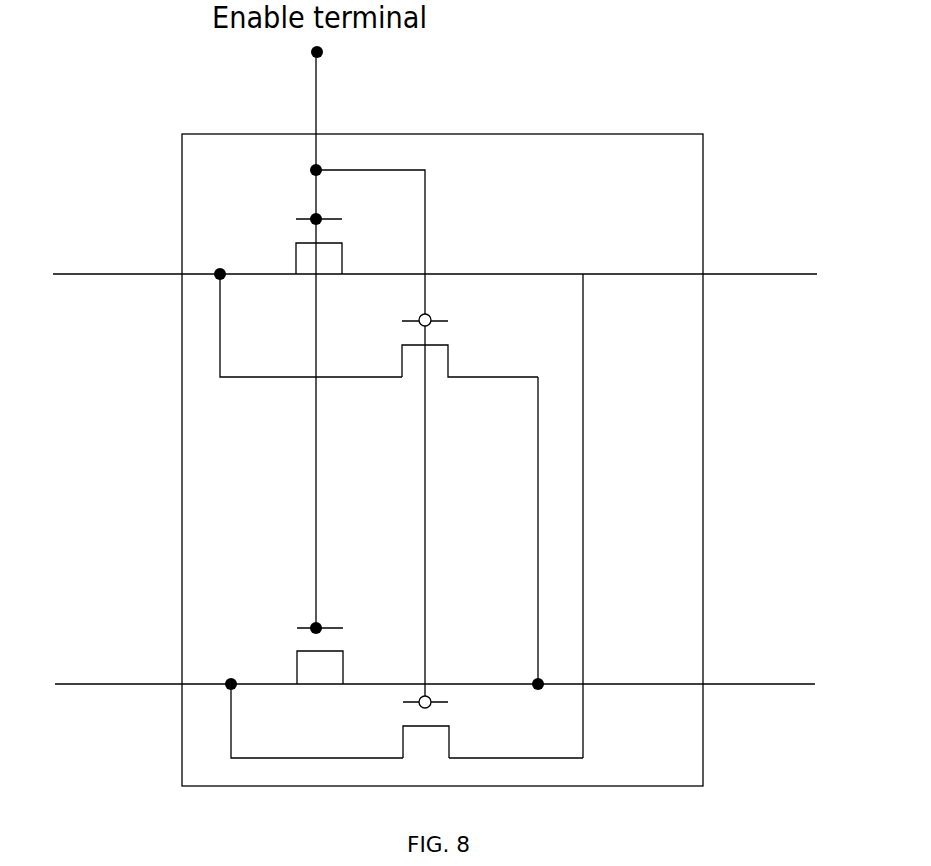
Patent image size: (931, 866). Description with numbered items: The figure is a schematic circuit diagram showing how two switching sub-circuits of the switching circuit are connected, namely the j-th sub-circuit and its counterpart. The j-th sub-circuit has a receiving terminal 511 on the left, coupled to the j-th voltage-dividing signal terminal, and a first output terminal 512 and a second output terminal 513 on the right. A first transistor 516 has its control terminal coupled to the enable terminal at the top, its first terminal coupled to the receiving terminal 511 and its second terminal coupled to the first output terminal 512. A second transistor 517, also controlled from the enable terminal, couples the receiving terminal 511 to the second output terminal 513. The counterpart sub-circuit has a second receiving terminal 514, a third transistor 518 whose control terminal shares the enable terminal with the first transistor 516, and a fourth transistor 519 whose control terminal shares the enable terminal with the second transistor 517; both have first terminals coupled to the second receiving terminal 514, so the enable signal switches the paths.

The receiving terminal 511 is at (266, 254).
The first output terminal 512 is at (648, 254).
The second output terminal 513 is at (647, 660).
The second receiving terminal 514 is at (267, 664).
The first transistor 516 is at (288, 248).
The second transistor 517 is at (415, 378).
The third transistor 518 is at (290, 662).
The fourth transistor 519 is at (452, 712).